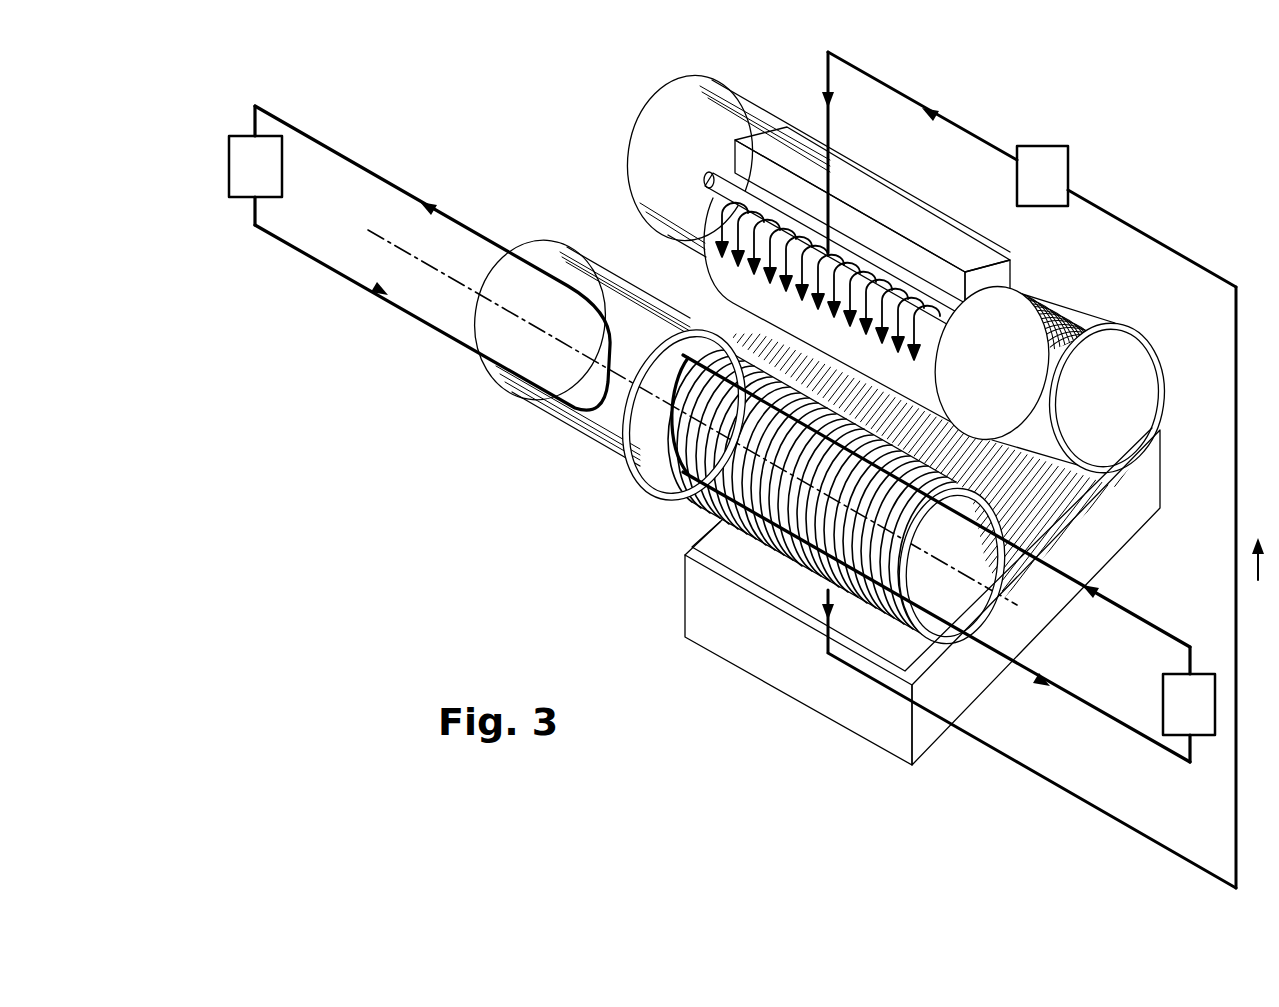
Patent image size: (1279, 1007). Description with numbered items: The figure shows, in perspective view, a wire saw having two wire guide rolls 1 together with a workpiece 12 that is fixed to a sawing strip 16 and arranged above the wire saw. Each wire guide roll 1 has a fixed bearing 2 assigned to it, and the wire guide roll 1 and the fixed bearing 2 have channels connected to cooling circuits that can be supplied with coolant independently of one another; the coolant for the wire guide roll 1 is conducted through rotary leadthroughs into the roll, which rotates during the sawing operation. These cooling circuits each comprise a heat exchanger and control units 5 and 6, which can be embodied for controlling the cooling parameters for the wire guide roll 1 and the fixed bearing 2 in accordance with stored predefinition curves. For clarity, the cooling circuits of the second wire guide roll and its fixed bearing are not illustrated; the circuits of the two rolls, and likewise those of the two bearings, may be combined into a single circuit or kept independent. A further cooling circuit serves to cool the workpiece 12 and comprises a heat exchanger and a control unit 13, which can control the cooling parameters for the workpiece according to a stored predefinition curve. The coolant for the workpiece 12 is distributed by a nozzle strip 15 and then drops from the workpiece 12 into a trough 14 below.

The wire guide roll 1 is at (652, 460).
The fixed bearing 2 is at (600, 423).
The control unit 5 is at (1175, 698).
The control unit 6 is at (240, 170).
The workpiece 12 is at (1012, 330).
The control unit 13 is at (1040, 157).
The trough 14 is at (770, 650).
The nozzle strip 15 is at (703, 178).
The sawing strip 16 is at (800, 147).